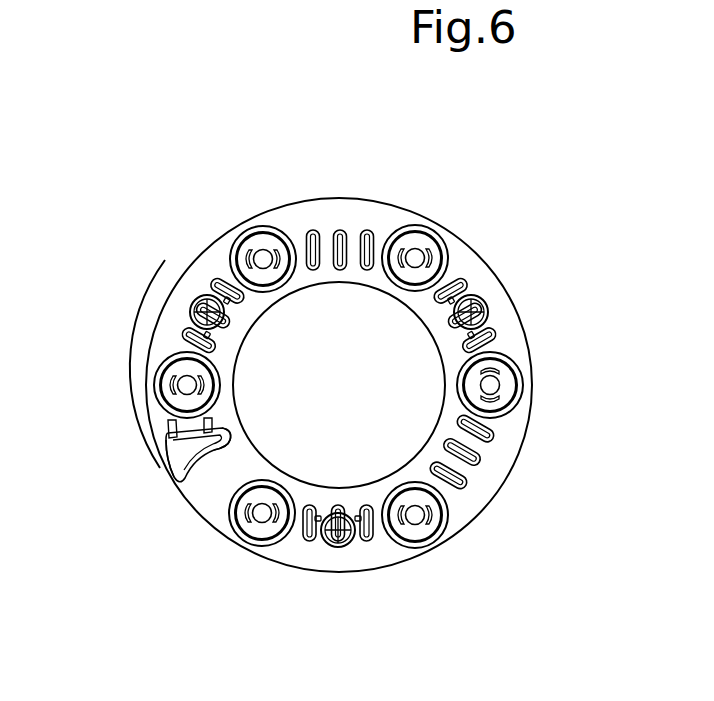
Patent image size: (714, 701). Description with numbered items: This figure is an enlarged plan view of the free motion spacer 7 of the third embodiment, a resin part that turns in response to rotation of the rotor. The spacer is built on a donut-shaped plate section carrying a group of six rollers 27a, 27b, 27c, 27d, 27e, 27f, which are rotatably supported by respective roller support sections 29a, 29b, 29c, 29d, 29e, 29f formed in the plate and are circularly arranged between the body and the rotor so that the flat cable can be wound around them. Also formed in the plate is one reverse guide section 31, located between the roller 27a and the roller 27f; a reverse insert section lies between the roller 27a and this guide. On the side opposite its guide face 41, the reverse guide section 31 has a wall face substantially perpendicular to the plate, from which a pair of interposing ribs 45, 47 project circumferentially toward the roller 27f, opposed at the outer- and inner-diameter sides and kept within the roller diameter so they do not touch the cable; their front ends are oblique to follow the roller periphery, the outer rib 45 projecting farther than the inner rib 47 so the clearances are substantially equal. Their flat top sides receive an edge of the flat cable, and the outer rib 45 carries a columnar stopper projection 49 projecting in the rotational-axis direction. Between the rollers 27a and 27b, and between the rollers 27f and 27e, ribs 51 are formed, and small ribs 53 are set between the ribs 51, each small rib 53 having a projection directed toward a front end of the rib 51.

The free motion spacer 7 is at (369, 196).
The roller 27a is at (276, 548).
The roller 27b is at (447, 533).
The roller 27c is at (522, 382).
The roller 27d is at (440, 228).
The roller 27e is at (260, 226).
The roller 27f is at (170, 360).
The roller support section 29a is at (256, 526).
The roller support section 29b is at (425, 525).
The roller support section 29c is at (506, 393).
The roller support section 29d is at (430, 258).
The roller support section 29e is at (256, 244).
The roller support section 29f is at (174, 372).
The reverse guide section 31 is at (163, 464).
The guide face 41 is at (186, 482).
The rib 45 is at (166, 437).
The rib 47 is at (229, 433).
The projection 49 is at (168, 421).
The rib 51 is at (188, 326).
The small rib 53 is at (219, 333).